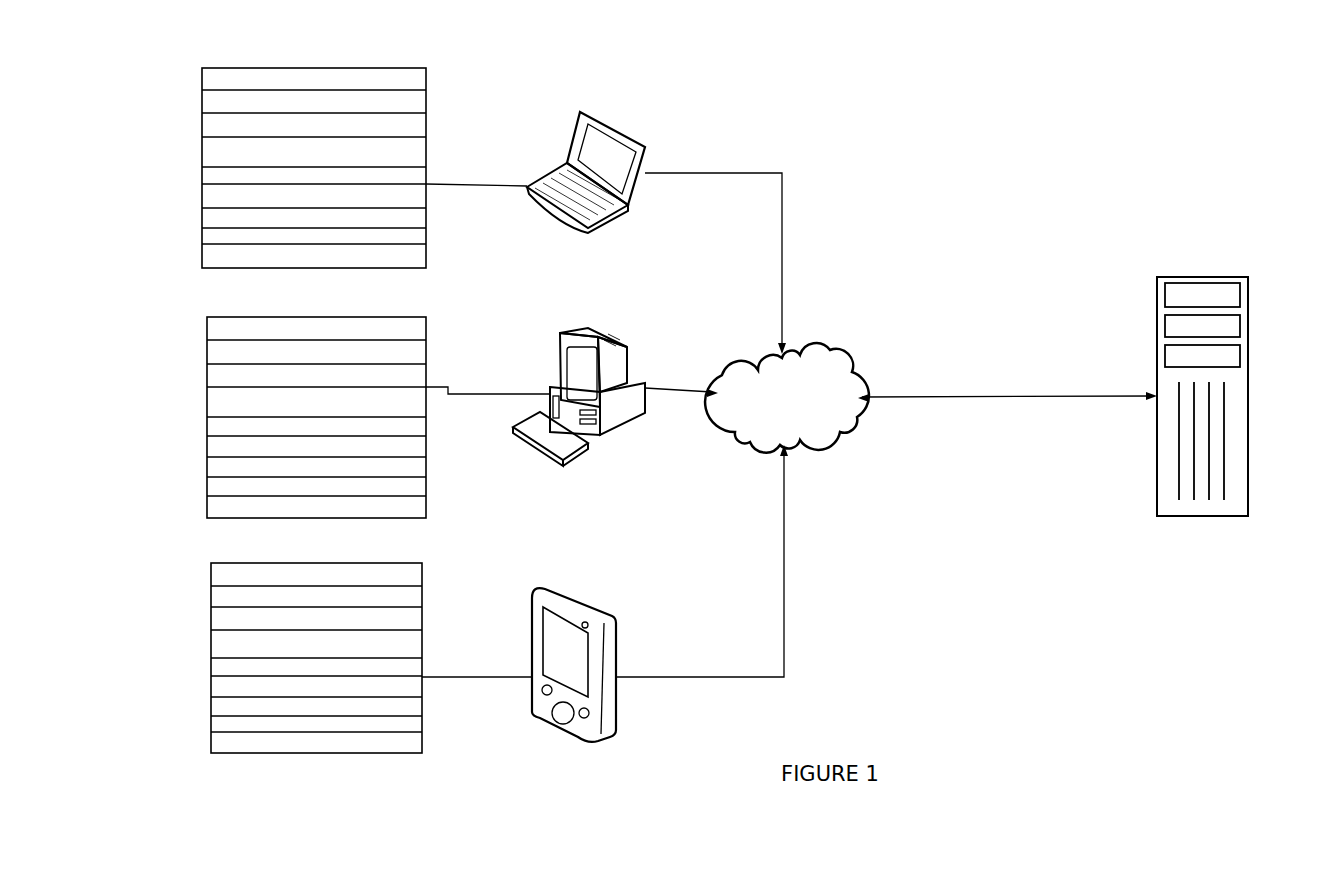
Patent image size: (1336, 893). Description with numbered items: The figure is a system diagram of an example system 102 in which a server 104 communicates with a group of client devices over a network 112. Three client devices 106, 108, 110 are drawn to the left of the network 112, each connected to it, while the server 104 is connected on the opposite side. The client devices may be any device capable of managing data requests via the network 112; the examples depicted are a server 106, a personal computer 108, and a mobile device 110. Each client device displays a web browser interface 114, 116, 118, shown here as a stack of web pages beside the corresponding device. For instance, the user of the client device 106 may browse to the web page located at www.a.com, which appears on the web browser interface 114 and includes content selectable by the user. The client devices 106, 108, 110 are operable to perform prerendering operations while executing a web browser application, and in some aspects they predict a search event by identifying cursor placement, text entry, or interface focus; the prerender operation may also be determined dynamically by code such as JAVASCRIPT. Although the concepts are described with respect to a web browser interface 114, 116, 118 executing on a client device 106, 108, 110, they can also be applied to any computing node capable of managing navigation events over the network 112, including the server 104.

The system 102 is at (1114, 78).
The server 104 is at (1217, 276).
The client device 106 is at (615, 127).
The client device 108 is at (617, 340).
The client device 110 is at (593, 597).
The network 112 is at (774, 414).
The web browser interface 114 is at (397, 67).
The web browser interface 116 is at (424, 317).
The web browser interface 118 is at (422, 562).